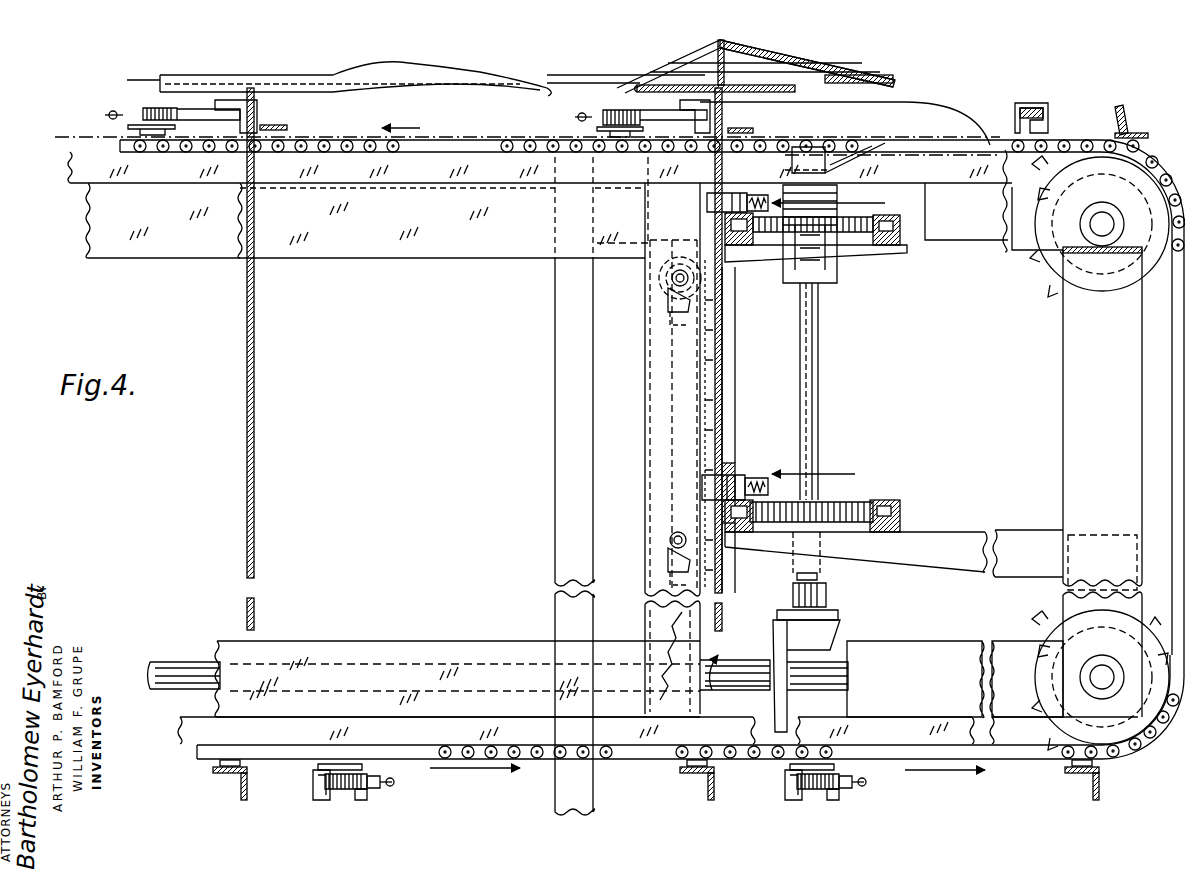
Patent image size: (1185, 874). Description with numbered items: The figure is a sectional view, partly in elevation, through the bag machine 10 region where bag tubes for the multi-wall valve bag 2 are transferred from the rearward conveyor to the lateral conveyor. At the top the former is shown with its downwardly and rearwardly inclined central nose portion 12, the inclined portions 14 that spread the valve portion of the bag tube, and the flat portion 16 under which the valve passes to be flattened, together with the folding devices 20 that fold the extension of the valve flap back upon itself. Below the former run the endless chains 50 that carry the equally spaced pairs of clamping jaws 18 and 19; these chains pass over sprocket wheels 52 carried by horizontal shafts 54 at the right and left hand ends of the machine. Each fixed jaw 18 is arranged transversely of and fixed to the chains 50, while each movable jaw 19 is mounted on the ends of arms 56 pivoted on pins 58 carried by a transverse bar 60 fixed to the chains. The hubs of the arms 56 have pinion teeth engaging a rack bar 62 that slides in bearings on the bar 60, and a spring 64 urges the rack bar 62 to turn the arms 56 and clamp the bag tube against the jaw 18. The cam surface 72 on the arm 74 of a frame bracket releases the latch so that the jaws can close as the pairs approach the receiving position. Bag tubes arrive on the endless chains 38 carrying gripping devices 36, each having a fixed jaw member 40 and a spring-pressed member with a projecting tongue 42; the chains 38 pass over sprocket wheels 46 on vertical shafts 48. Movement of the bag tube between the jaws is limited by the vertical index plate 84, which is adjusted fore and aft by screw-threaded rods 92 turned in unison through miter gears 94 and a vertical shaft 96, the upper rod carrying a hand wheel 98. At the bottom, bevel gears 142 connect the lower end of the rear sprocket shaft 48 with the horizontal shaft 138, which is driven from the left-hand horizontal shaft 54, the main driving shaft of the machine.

The bag 2 is at (240, 602).
The former 10 is at (898, 76).
The central nose portion 12 is at (770, 62).
The inclined portions 14 is at (665, 65).
The flat portion 16 is at (860, 75).
The clamping jaw 18 is at (275, 125).
The movable clamping jaw 19 is at (235, 100).
The folding devices 20 is at (378, 68).
The gripping devices 36 is at (838, 336).
The endless chains 38 is at (895, 245).
The fixed jaw member 40 is at (730, 202).
The projecting tongue 42 is at (758, 212).
The sprocket wheels 46 is at (855, 232).
The vertical shafts 48 is at (816, 410).
The endless chains 50 is at (998, 148).
The sprocket wheels 52 is at (1040, 280).
The horizontal shafts 54 is at (1104, 232).
The arms 56 is at (195, 110).
The pins 58 is at (157, 108).
The transverse bar 60 is at (130, 128).
The rack bar 62 is at (372, 800).
The spring 64 is at (108, 115).
The cam surface 72 is at (830, 152).
The arm 74 is at (890, 148).
The index plate 84 is at (705, 392).
The rods 92 is at (672, 280).
The miter gears 94 is at (668, 300).
The vertical shaft 96 is at (672, 412).
The hand wheel 98 is at (600, 244).
The horizontal shaft 138 is at (182, 662).
The bevel gears 142 is at (830, 640).